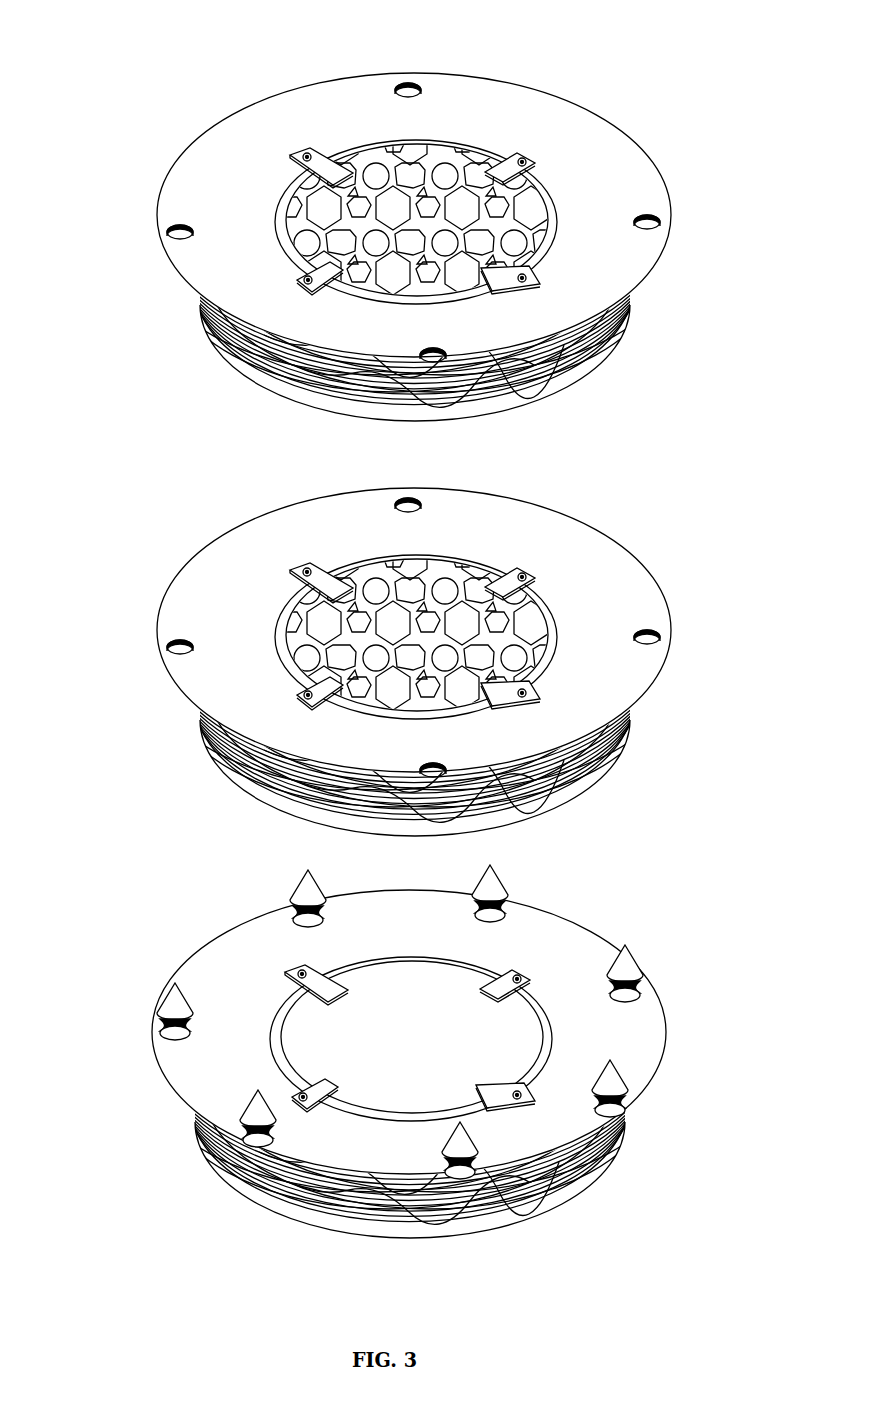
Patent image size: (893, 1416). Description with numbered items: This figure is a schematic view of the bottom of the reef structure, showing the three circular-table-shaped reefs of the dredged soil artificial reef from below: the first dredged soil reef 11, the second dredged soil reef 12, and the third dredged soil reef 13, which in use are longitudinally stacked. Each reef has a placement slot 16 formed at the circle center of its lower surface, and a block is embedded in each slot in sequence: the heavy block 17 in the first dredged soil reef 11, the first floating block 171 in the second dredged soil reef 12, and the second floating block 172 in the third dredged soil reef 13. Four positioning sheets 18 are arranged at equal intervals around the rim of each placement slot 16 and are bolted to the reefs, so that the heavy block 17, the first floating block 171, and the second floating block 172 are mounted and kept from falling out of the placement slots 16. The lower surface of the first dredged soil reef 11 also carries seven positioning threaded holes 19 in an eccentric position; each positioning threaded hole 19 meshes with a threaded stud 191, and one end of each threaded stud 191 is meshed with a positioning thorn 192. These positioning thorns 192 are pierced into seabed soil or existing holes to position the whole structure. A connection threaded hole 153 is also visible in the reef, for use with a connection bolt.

The first dredged soil reef 11 is at (395, 1087).
The second dredged soil reef 12 is at (400, 662).
The third dredged soil reef 13 is at (412, 210).
The placement slot 16 is at (278, 1073).
The heavy block 17 is at (395, 1052).
The positioning sheet 18 is at (330, 163).
The positioning threaded hole 19 is at (113, 1028).
The connection threaded hole 153 is at (172, 236).
The first floating block 171 is at (340, 627).
The second floating block 172 is at (445, 167).
The threaded stud 191 is at (163, 1025).
The positioning thorn 192 is at (173, 1003).